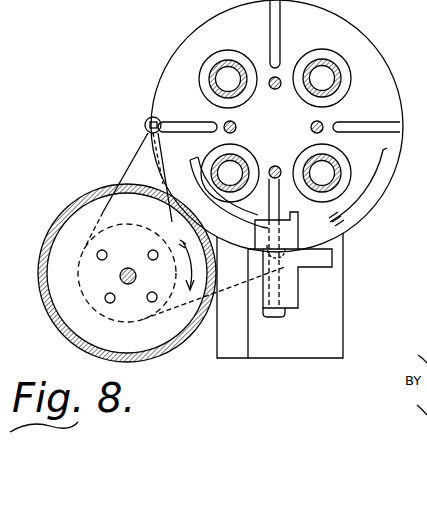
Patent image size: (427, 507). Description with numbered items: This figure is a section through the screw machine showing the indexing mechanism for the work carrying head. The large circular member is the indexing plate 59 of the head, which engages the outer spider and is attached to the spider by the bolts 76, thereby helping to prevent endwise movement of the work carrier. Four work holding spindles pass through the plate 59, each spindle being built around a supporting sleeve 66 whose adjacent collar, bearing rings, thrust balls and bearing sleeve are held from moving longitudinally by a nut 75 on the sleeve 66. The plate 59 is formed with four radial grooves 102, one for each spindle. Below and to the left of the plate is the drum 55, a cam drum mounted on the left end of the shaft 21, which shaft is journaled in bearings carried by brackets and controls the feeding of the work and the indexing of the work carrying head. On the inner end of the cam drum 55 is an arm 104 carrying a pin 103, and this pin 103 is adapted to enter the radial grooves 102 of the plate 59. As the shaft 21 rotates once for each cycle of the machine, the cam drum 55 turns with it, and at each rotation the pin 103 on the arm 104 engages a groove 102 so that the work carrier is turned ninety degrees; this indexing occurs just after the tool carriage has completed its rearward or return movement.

The plate 59 is at (342, 40).
The nut 75 is at (222, 55).
The supporting sleeve 66 is at (212, 75).
The radial groove 102 is at (270, 37).
The bolt 76 is at (310, 127).
The pin 103 is at (145, 125).
The arm 104 is at (131, 162).
The drum 55 is at (79, 214).
The shaft 21 is at (128, 268).